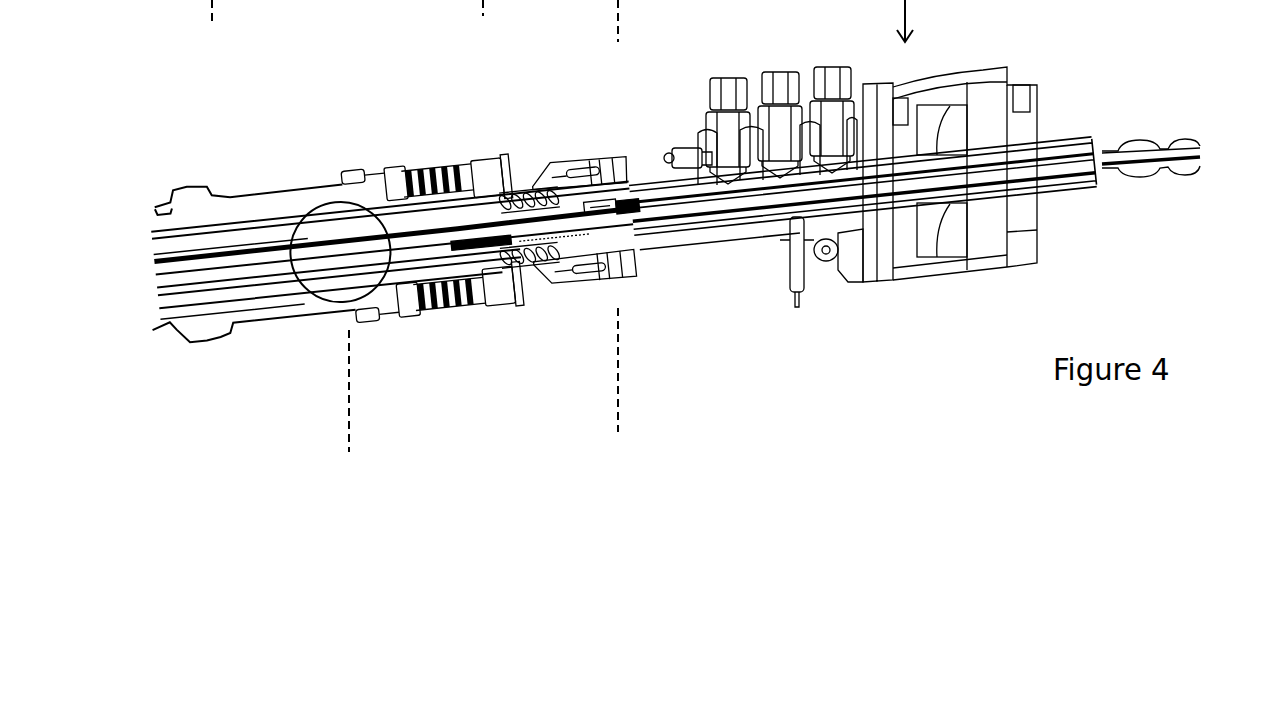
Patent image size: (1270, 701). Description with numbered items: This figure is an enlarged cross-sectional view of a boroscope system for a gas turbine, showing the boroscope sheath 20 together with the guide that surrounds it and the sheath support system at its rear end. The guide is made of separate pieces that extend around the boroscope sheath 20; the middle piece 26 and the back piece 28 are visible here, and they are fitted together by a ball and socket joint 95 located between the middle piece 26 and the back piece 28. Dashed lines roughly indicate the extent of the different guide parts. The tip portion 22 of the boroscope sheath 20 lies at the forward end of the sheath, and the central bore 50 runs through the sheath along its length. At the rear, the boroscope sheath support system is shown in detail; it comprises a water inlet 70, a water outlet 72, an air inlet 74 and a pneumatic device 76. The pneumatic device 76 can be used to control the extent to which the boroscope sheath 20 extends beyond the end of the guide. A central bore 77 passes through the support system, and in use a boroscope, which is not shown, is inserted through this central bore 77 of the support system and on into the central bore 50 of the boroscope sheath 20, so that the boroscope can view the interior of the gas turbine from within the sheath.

The boroscope sheath 20 is at (592, 208).
The tip portion 22 is at (182, 25).
The middle piece 26 is at (254, 321).
The back piece 28 is at (510, 275).
The central bore 50 is at (620, 212).
The water inlet 70 is at (730, 77).
The water outlet 72 is at (787, 70).
The air inlet 74 is at (833, 63).
The pneumatic device 76 is at (970, 70).
The central bore 77 is at (1123, 163).
The ball and socket joint 95 is at (363, 293).